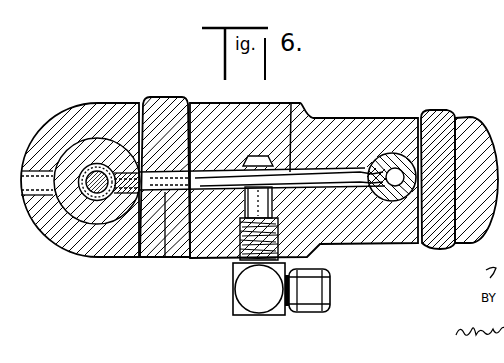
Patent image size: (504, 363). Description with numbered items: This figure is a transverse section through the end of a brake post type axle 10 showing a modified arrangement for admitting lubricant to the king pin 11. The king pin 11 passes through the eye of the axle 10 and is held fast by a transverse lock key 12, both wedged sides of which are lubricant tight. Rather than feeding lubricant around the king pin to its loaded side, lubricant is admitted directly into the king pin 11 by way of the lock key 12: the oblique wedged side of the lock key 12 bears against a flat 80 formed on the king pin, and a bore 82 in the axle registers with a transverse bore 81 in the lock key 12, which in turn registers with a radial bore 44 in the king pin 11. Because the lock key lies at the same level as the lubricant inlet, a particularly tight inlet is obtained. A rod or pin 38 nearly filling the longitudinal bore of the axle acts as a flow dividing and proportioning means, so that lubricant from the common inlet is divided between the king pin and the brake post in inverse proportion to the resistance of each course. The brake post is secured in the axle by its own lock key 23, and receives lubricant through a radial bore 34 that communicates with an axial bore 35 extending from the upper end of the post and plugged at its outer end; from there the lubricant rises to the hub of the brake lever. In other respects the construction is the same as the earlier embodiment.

The axle 10 is at (335, 128).
The king pin 11 is at (67, 150).
The lock key 12 is at (160, 105).
The lock key 23 is at (440, 244).
The radial bore 34 is at (389, 155).
The axial bore 35 is at (395, 187).
The rod or pin 38 is at (291, 104).
The radial bore 44 is at (115, 208).
The flat 80 is at (122, 150).
The transverse bore 81 is at (164, 258).
The bore 82 is at (203, 104).